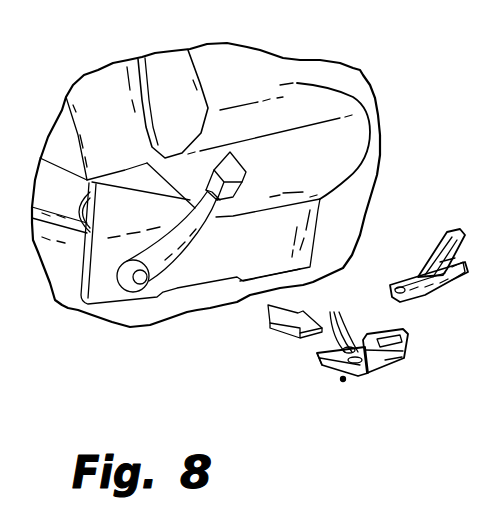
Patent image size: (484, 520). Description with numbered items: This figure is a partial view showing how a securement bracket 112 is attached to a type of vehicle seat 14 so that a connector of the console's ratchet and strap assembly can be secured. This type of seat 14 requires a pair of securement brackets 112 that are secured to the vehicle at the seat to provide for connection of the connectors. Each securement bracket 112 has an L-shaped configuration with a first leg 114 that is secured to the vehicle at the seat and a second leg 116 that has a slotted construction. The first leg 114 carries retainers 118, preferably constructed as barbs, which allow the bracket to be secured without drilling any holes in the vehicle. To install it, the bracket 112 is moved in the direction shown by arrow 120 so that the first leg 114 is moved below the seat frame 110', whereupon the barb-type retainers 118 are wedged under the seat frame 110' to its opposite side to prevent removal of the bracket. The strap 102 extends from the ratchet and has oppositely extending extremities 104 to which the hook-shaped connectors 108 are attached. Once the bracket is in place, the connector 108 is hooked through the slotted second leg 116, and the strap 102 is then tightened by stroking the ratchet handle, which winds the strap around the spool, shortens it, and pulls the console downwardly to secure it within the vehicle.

The vehicle seat 14 is at (251, 71).
The strap 102 is at (447, 232).
The strap extremities 104 is at (450, 282).
The connectors 108 is at (415, 284).
The seat frame 110' is at (190, 269).
The securement bracket 112 is at (343, 379).
The first leg 114 is at (320, 358).
The second leg 116 is at (406, 350).
The retainers 118 is at (342, 324).
The arrow 120 is at (283, 335).